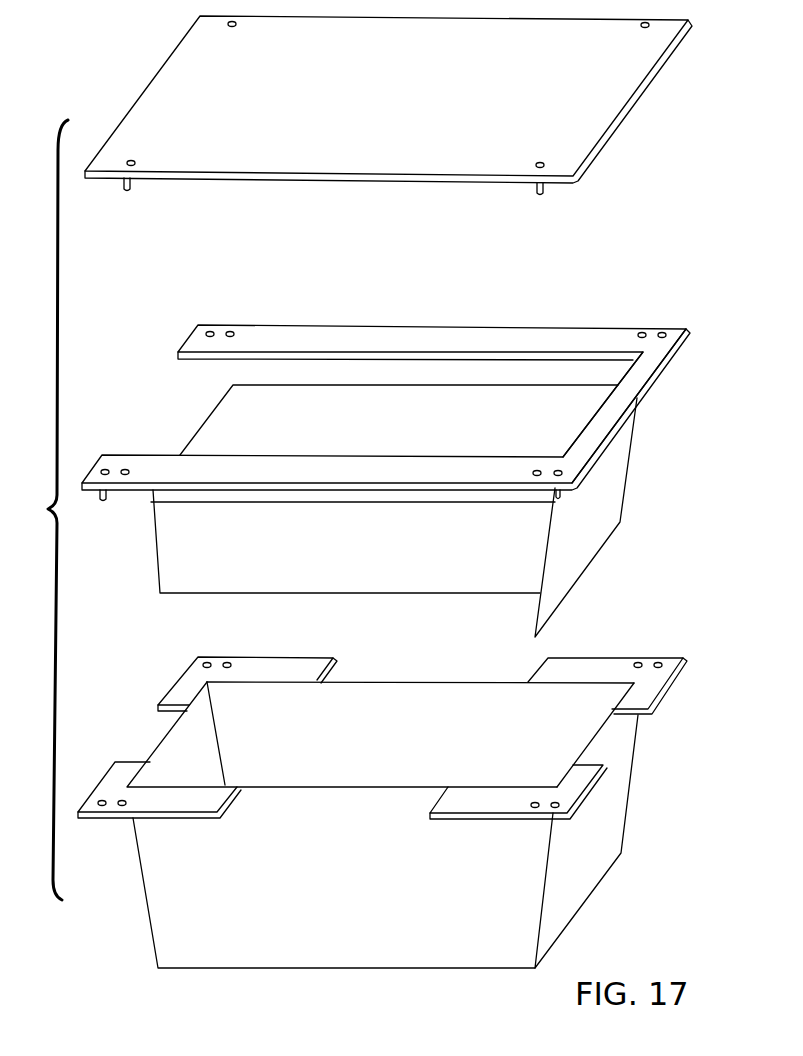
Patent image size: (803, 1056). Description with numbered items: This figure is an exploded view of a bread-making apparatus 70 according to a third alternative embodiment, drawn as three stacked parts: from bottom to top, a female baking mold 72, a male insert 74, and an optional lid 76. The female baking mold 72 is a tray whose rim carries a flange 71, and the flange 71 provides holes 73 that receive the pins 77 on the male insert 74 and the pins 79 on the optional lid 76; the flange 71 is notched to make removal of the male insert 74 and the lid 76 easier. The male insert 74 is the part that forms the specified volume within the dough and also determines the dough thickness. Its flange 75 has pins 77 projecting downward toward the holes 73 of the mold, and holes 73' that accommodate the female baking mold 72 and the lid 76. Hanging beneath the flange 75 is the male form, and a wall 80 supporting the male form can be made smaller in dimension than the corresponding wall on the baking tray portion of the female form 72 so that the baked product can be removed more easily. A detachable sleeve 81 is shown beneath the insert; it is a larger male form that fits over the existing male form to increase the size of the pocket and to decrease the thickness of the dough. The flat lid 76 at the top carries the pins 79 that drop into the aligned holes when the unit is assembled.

The apparatus 70 is at (40, 510).
The flange 71 is at (396, 812).
The female baking mold 72 is at (636, 767).
The holes 73 is at (537, 771).
The holes 73' is at (521, 440).
The male insert 74 is at (397, 481).
The flange 75 is at (582, 445).
The lid 76 is at (401, 125).
The pins 77 is at (562, 493).
The pins 79 is at (547, 182).
The wall 80 is at (625, 432).
The detachable sleeve 81 is at (188, 555).